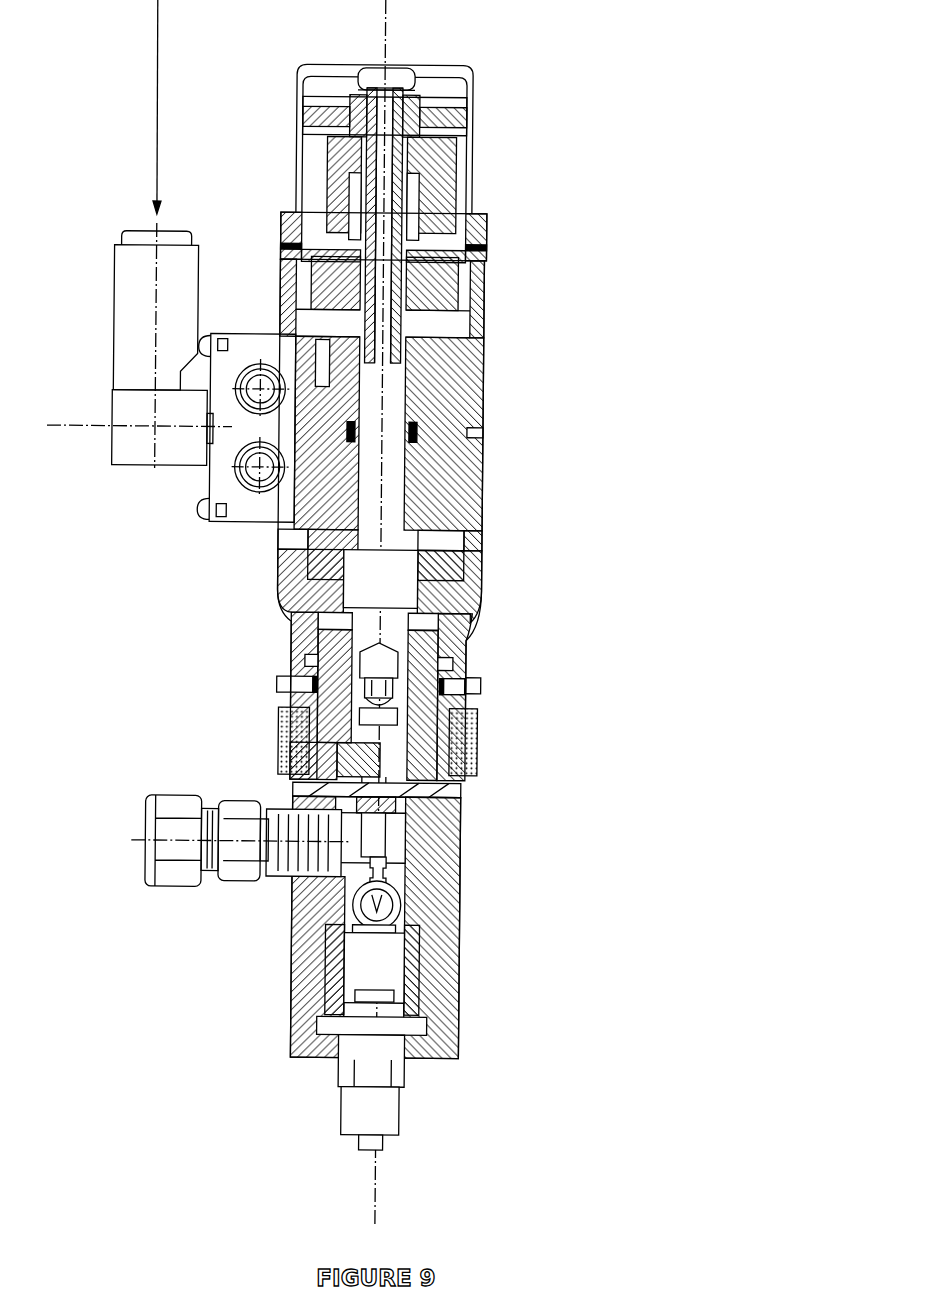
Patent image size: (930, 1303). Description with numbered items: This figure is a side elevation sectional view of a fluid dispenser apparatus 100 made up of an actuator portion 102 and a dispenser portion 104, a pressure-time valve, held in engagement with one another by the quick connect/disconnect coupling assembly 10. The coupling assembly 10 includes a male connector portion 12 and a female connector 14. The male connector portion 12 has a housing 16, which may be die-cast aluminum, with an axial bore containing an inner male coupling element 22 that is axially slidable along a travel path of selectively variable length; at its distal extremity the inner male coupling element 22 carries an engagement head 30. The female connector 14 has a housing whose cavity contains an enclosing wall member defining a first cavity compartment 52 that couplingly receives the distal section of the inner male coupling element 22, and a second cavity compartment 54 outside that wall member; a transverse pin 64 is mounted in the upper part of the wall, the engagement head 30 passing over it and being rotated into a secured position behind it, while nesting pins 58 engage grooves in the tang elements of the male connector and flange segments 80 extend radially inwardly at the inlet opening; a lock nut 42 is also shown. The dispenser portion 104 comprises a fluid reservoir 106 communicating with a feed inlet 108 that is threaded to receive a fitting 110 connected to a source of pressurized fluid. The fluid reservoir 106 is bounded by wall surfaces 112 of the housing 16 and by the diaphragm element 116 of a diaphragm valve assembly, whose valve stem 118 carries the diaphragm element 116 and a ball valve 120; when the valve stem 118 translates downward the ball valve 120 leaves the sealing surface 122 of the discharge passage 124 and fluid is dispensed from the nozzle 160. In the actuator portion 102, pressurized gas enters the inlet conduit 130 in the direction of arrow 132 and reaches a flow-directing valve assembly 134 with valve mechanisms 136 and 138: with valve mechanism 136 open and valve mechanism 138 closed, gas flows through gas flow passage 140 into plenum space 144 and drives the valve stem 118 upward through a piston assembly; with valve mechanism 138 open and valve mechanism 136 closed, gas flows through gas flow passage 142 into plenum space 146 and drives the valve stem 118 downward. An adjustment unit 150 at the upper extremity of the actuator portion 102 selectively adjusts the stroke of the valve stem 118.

The coupling assembly 10 is at (240, 677).
The male connector portion 12 is at (468, 809).
The female connector 14 is at (496, 632).
The housing 16 is at (404, 930).
The inner male coupling element 22 is at (400, 705).
The engagement head 30 is at (352, 672).
The lock nut 42 is at (471, 760).
The first cavity compartment 52 is at (425, 622).
The second cavity compartment 54 is at (466, 568).
The nesting pins 58 is at (394, 667).
The transverse pin 64 is at (462, 684).
The flange segments 80 is at (298, 697).
The fluid dispenser apparatus 100 is at (515, 101).
The actuator portion 102 is at (518, 396).
The dispenser portion 104 is at (498, 855).
The fluid reservoir 106 is at (412, 822).
The feed inlet 108 is at (339, 868).
The fitting 110 is at (192, 888).
The wall surfaces 112 is at (409, 838).
The diaphragm element 116 is at (340, 757).
The valve stem 118 is at (332, 790).
The ball valve 120 is at (358, 906).
The sealing surface 122 is at (394, 892).
The discharge passage 124 is at (406, 968).
The pressurized gas inlet conduit 130 is at (192, 282).
The arrow 132 is at (160, 36).
The flow-directing valve assembly 134 is at (251, 500).
The valve mechanism 136 is at (260, 338).
The valve mechanism 138 is at (244, 522).
The gas flow passage 140 is at (320, 376).
The gas flow passage 142 is at (344, 492).
The plenum space 144 is at (279, 237).
The plenum space 146 is at (304, 533).
The adjustment unit 150 is at (472, 127).
The nozzle 160 is at (407, 1108).